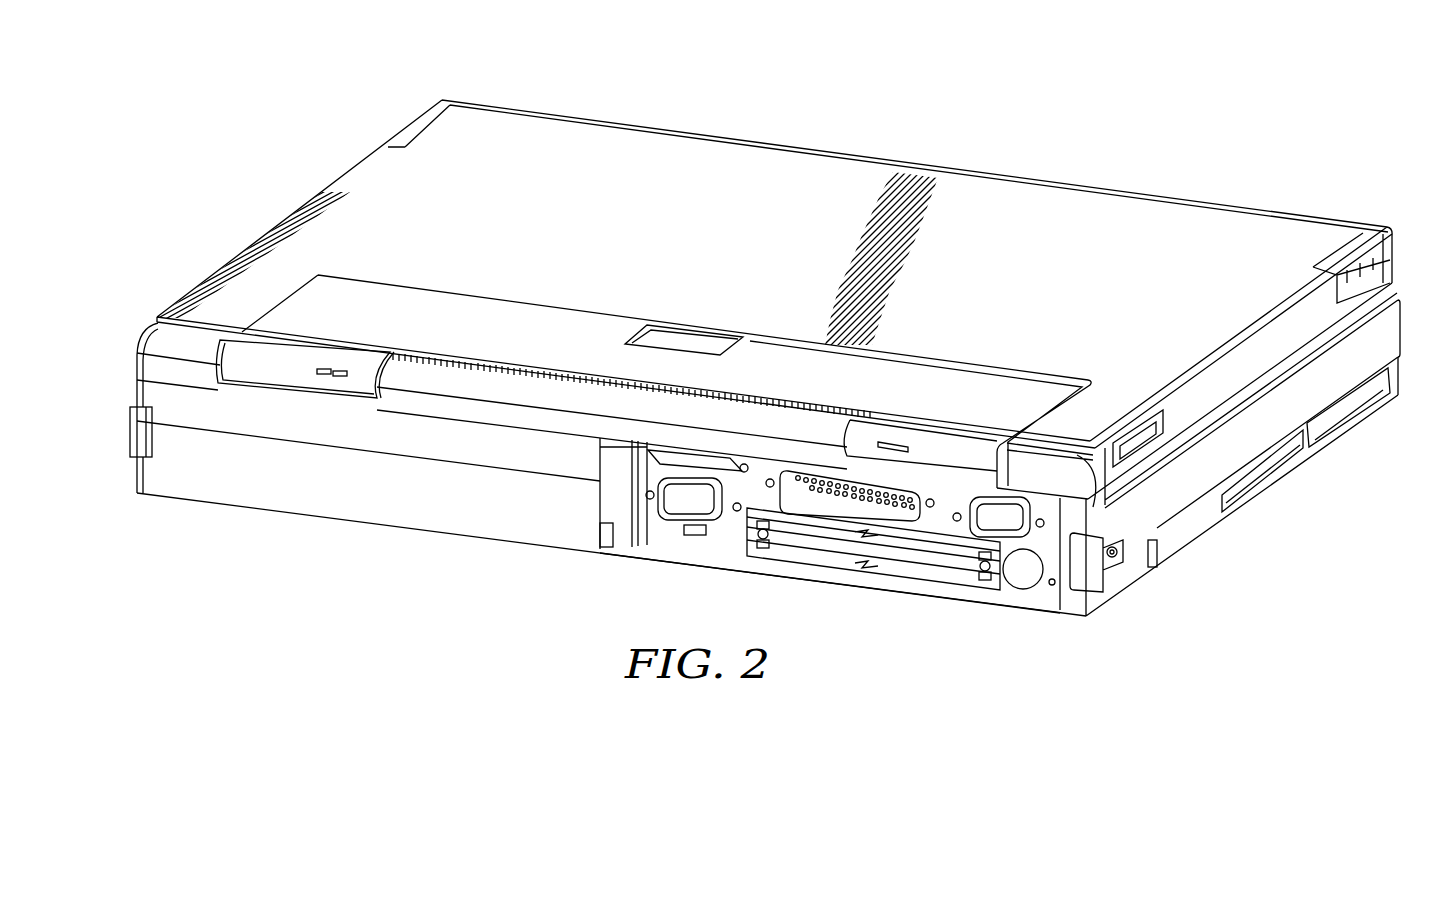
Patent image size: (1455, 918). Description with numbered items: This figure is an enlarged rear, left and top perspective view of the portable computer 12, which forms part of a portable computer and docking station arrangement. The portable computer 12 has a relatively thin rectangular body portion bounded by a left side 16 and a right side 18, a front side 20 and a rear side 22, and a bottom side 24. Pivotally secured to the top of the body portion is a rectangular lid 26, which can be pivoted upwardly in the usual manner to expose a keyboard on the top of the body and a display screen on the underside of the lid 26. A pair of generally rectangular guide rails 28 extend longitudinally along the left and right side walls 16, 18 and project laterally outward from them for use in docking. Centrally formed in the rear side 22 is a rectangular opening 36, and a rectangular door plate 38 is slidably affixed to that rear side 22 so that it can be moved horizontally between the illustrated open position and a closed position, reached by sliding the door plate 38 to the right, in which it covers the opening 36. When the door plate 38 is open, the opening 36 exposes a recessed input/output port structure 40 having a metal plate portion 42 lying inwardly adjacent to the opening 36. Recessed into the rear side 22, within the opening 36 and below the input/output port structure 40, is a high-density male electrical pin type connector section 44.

The portable computer 12 is at (955, 113).
The left side 16 is at (1182, 537).
The right side 18 is at (132, 473).
The front side 20 is at (1392, 377).
The rear side 22 is at (263, 503).
The bottom side 24 is at (380, 525).
The lid 26 is at (806, 269).
The guide rails 28 is at (125, 432).
The rectangular opening 36 is at (675, 537).
The door plate 38 is at (605, 490).
The input/output port structure 40 is at (893, 500).
The metal plate portion 42 is at (755, 478).
The high-density male electrical pin type connector section 44 is at (803, 540).